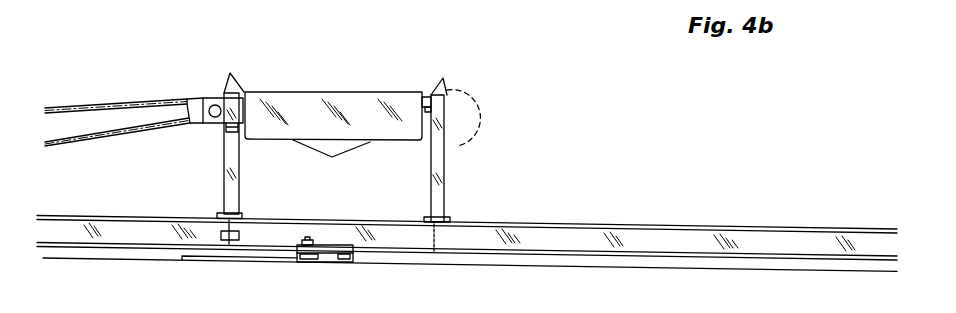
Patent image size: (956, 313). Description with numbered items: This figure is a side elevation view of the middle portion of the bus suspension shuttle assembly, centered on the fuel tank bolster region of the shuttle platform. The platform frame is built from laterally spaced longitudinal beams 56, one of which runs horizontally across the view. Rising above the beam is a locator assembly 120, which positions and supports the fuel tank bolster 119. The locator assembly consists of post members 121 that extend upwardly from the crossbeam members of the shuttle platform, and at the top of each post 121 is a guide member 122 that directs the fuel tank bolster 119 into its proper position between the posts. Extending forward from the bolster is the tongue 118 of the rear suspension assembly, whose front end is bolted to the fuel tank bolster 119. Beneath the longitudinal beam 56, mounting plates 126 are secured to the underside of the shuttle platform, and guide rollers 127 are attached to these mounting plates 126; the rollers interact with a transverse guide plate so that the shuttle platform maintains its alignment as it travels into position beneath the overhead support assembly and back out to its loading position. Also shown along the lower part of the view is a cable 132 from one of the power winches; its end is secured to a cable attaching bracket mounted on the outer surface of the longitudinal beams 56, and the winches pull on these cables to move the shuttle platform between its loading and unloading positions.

The longitudinal beam 56 is at (577, 235).
The tongue 118 is at (97, 130).
The fuel tank bolster 119 is at (335, 102).
The locator assembly 120 is at (460, 155).
The post member 121 is at (223, 172).
The guide member 122 is at (228, 78).
The mounting plate 126 is at (331, 244).
The guide roller 127 is at (315, 259).
The cable 132 is at (245, 297).